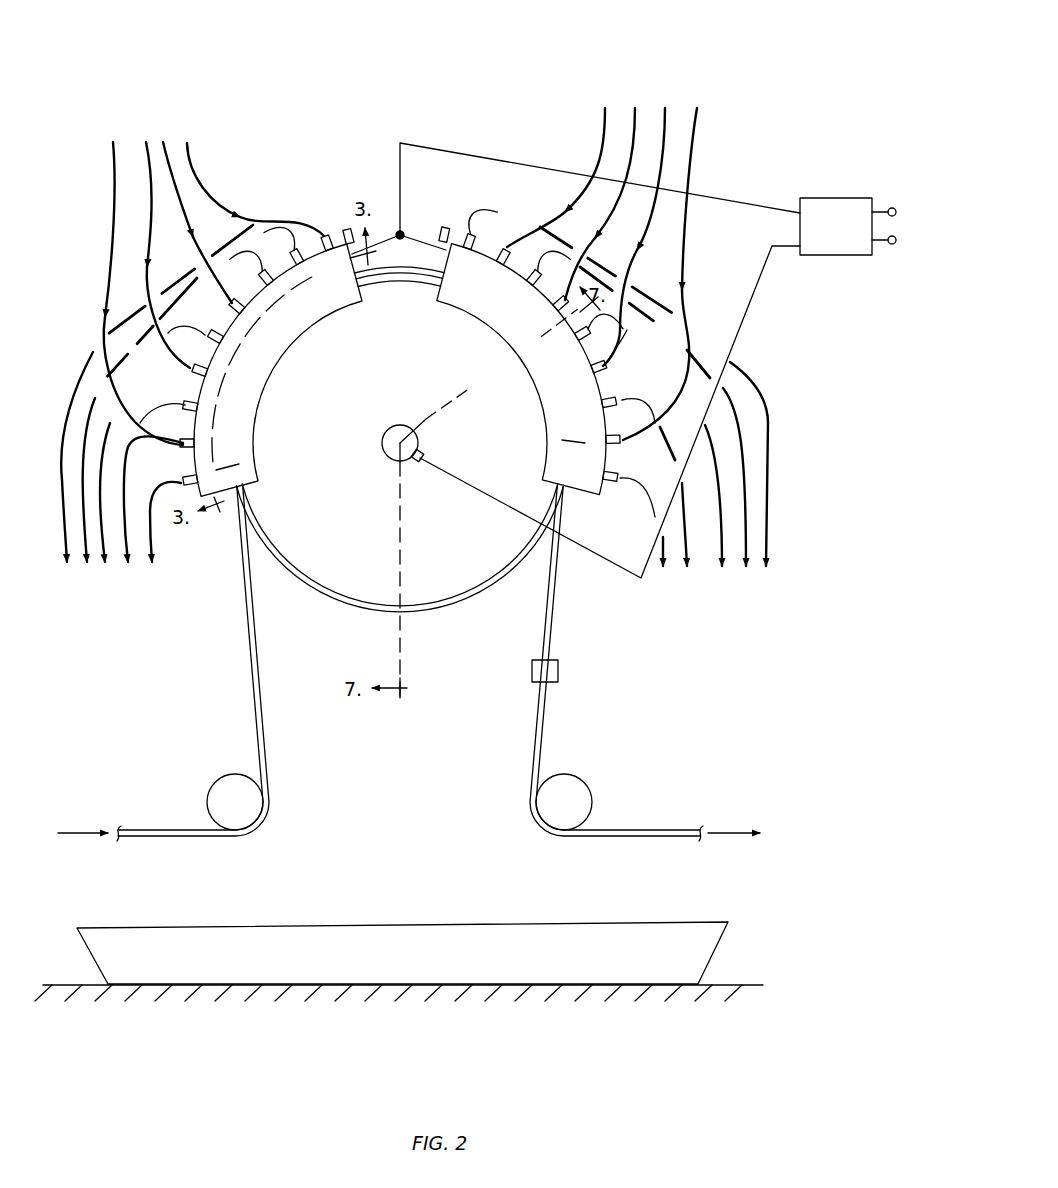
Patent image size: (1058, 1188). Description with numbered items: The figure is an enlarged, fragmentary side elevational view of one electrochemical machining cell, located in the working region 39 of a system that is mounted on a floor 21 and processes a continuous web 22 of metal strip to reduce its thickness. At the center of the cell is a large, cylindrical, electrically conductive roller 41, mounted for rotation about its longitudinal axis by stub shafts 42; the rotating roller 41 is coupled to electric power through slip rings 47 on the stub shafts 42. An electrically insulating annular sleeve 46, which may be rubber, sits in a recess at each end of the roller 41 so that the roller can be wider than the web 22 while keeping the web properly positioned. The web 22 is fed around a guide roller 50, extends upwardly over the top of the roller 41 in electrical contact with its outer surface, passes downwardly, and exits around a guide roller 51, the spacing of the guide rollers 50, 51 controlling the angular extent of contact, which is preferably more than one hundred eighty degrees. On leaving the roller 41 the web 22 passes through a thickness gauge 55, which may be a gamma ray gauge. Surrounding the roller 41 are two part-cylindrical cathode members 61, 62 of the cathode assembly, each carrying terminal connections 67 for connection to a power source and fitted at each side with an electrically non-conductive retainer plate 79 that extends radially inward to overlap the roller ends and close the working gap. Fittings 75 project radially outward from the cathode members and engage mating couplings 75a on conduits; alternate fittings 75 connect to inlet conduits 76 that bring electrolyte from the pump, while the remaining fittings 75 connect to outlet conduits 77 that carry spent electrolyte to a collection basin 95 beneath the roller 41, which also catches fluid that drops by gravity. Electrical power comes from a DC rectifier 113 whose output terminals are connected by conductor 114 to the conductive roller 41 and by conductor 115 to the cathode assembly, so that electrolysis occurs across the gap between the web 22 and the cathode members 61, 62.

The floor 21 is at (752, 983).
The web 22 is at (410, 263).
The working region 39 is at (289, 572).
The roller 41 is at (375, 595).
The stub shafts 42 is at (389, 456).
The insulating annular sleeve 46 is at (430, 611).
The slip rings 47 is at (423, 452).
The guide roller 50 is at (228, 795).
The guide roller 51 is at (568, 803).
The thickness gauge 55 is at (559, 672).
The cathode member 61 is at (318, 372).
The cathode member 62 is at (492, 331).
The terminal connections 67 is at (347, 237).
The fitting 75 is at (607, 378).
The mating coupling 75a is at (298, 232).
The inlet conduits 76 is at (195, 137).
The outlet conduits 77 is at (172, 572).
The retainer plate 79 is at (232, 463).
The collection basin 95 is at (350, 940).
The DC rectifier 113 is at (853, 197).
The conductor 114 is at (745, 310).
The conductor 115 is at (477, 156).